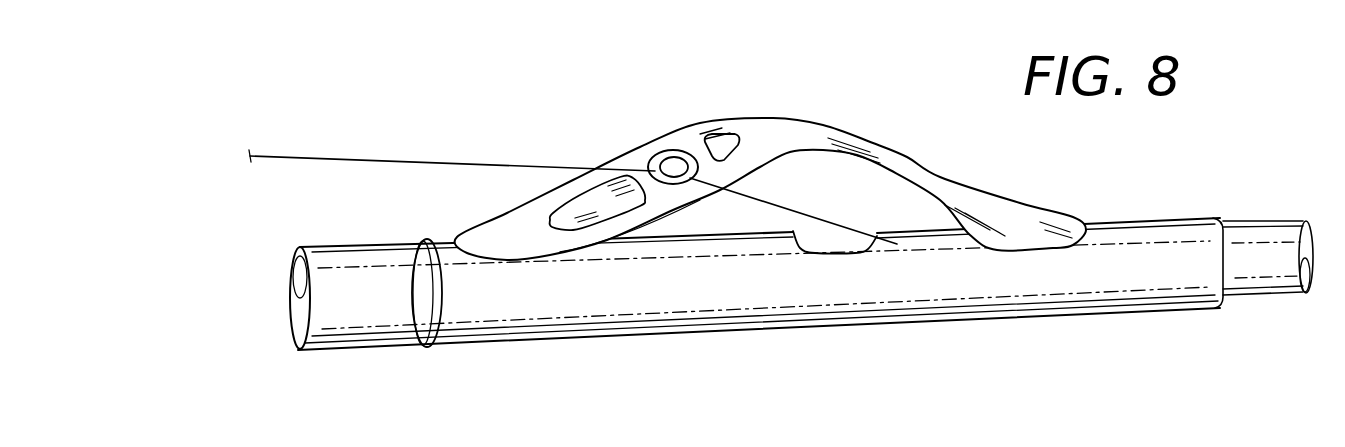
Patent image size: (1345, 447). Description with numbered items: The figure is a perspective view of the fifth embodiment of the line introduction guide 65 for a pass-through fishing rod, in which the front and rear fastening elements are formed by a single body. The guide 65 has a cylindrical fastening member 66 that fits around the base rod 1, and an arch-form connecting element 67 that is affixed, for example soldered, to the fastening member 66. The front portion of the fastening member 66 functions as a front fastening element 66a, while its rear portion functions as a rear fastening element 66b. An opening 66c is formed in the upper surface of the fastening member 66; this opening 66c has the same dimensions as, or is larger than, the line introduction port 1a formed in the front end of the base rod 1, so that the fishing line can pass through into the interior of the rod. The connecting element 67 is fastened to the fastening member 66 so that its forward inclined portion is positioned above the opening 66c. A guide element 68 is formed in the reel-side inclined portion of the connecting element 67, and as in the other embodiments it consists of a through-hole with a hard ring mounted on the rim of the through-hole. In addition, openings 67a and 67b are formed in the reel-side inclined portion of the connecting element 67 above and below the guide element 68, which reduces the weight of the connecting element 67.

The base rod 1 is at (386, 262).
The line introduction port 1a is at (827, 243).
The line introduction guide 65 is at (1086, 213).
The cylindrical fastening member 66 is at (907, 327).
The front fastening element 66a is at (1163, 287).
The rear fastening element 66b is at (500, 335).
The opening 66c is at (873, 252).
The arch-form connecting element 67 is at (823, 133).
The opening 67a is at (723, 140).
The opening 67b is at (575, 215).
The guide element 68 is at (674, 137).